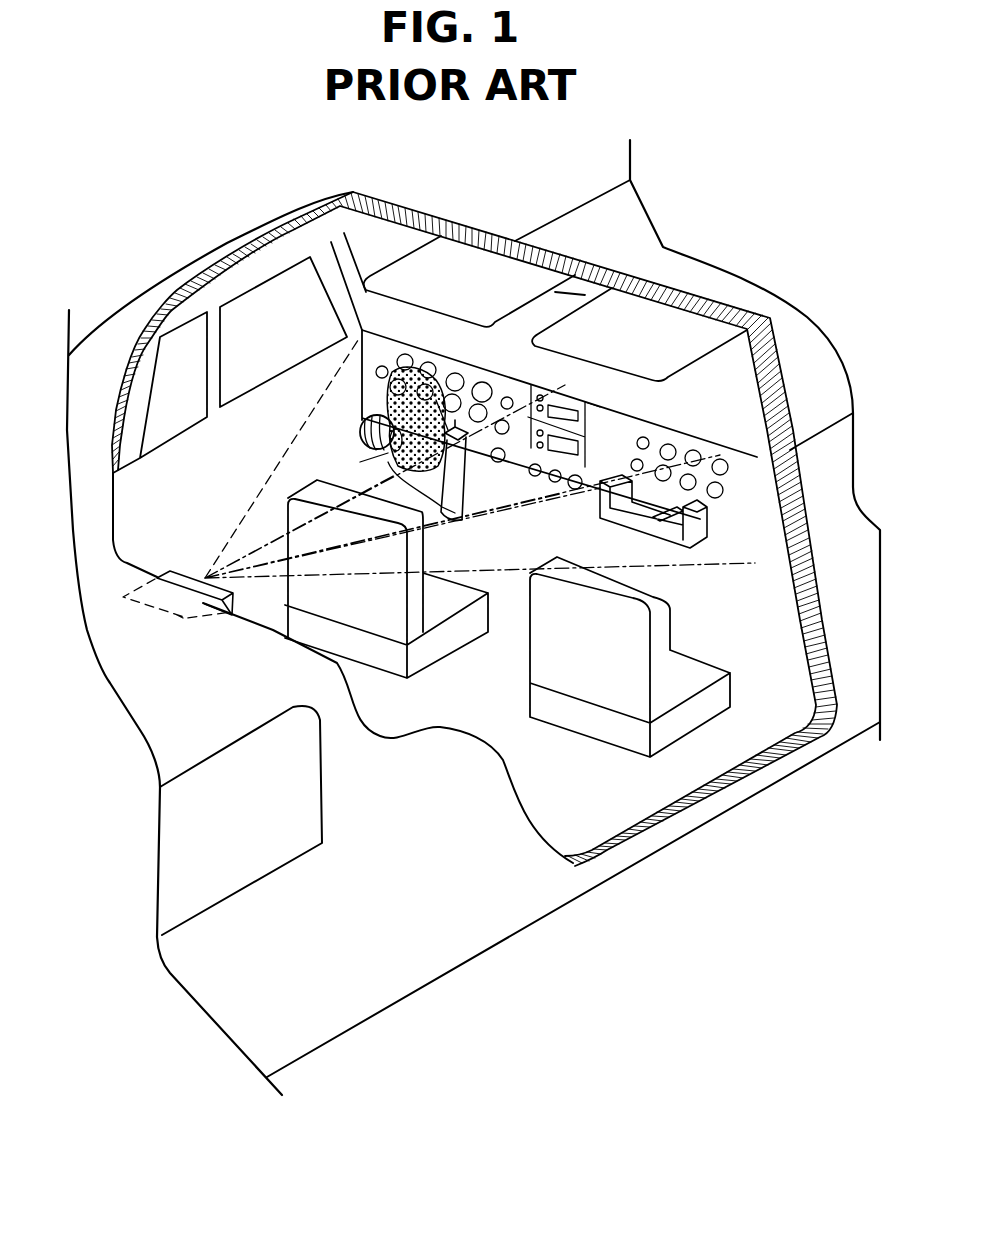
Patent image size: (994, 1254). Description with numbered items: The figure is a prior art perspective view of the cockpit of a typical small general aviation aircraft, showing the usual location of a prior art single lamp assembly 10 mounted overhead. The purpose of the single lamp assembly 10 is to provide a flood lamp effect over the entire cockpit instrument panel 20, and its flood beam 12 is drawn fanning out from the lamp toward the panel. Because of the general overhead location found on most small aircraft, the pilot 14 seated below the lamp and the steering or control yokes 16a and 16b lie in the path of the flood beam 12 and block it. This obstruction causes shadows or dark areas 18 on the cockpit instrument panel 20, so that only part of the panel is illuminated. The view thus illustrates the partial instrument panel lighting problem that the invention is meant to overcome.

The single lamp assembly 10 is at (180, 573).
The flood beam 12 is at (237, 530).
The pilot 14 is at (345, 465).
The steering or control yoke 16a is at (458, 428).
The steering or control yoke 16b is at (687, 543).
The shadows or dark areas 18 is at (380, 393).
The cockpit instrument panel 20 is at (767, 497).